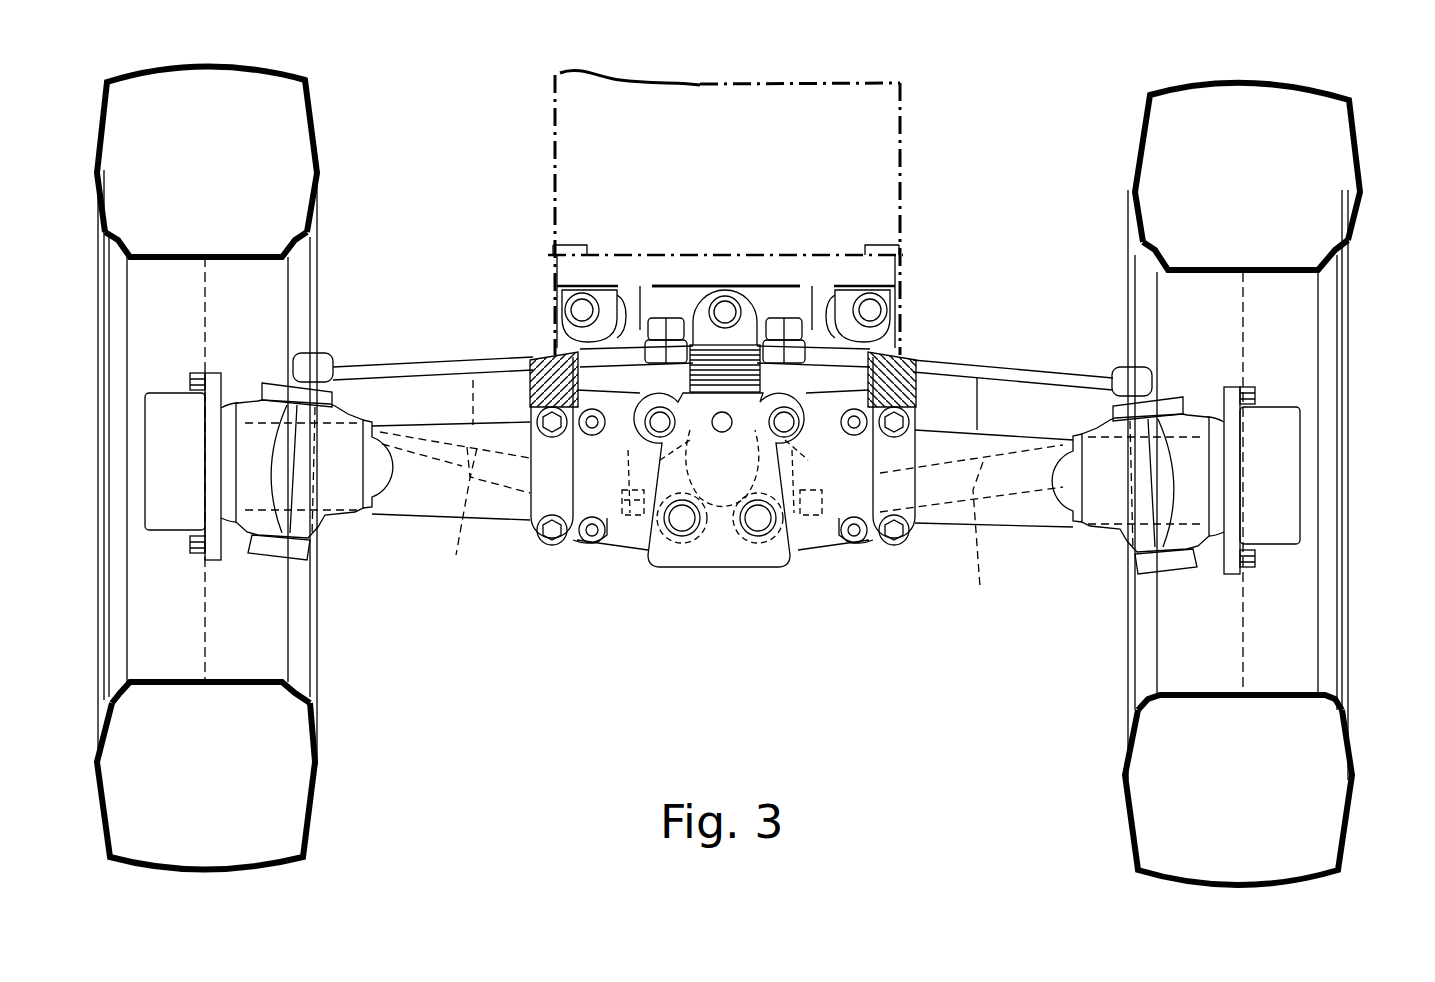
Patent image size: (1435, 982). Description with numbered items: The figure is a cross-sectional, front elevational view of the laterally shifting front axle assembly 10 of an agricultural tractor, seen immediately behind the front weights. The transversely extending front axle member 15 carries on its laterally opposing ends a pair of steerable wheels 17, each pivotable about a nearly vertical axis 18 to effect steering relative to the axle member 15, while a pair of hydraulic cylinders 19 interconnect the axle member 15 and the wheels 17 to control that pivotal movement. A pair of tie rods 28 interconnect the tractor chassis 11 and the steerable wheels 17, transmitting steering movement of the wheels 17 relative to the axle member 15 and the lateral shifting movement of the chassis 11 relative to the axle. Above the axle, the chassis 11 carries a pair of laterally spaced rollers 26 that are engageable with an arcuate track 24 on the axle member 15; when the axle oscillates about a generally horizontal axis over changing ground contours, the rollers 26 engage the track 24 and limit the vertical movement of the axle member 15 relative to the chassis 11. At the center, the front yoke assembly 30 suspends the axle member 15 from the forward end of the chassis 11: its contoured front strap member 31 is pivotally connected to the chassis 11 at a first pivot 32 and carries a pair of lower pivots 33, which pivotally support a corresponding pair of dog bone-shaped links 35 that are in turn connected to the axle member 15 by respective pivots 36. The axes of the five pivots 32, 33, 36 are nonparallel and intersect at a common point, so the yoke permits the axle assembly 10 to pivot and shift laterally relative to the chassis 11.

The front axle assembly 10 is at (1027, 100).
The tractor chassis 11 is at (708, 82).
The front axle member 15 is at (420, 500).
The steerable wheels 17 is at (185, 62).
The nearly vertical axes 18 is at (328, 356).
The hydraulic cylinders 19 is at (456, 555).
The arcuate track 24 is at (822, 360).
The rollers 26 is at (623, 293).
The tie rods 28 is at (372, 368).
The front yoke assembly 30 is at (888, 633).
The front strap member 31 is at (760, 533).
The first pivot 32 is at (718, 296).
The lower pivots 33 is at (683, 520).
The dog bone-shaped links 35 is at (1007, 410).
The pivots 36 is at (640, 412).